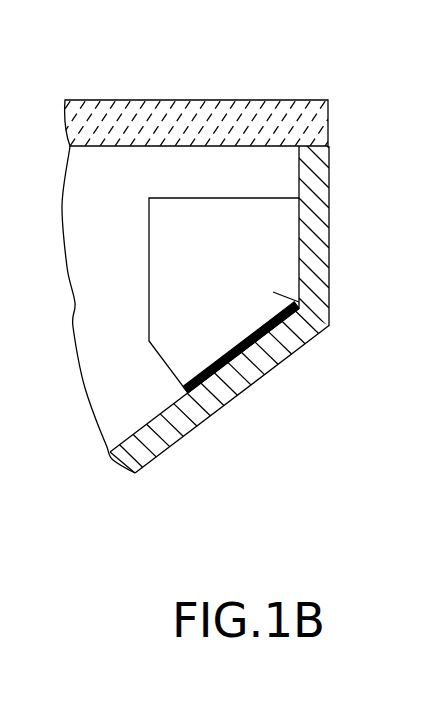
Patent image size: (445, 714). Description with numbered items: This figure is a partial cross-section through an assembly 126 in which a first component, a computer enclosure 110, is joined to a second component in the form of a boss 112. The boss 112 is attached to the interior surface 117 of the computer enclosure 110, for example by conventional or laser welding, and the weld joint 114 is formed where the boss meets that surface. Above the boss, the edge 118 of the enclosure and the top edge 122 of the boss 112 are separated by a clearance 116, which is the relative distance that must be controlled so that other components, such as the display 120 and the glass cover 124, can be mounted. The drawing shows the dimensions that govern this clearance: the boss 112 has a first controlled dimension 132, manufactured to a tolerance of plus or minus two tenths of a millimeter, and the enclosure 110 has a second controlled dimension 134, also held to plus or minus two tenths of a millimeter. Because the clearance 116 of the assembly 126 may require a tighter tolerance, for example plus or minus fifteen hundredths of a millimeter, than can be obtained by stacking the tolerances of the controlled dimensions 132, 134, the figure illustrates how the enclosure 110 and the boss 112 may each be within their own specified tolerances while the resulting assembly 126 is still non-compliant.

The computer enclosure 110 is at (230, 402).
The boss 112 is at (300, 302).
The weld joint 114 is at (265, 345).
The clearance 116 is at (232, 158).
The interior surface 117 is at (130, 438).
The edge of the enclosure 118 is at (315, 143).
The display 120 is at (110, 85).
The top edge of the boss 122 is at (175, 197).
The glass cover 124 is at (230, 99).
The assembly 126 is at (315, 423).
The first controlled dimension 132 is at (140, 341).
The second controlled dimension 134 is at (356, 330).